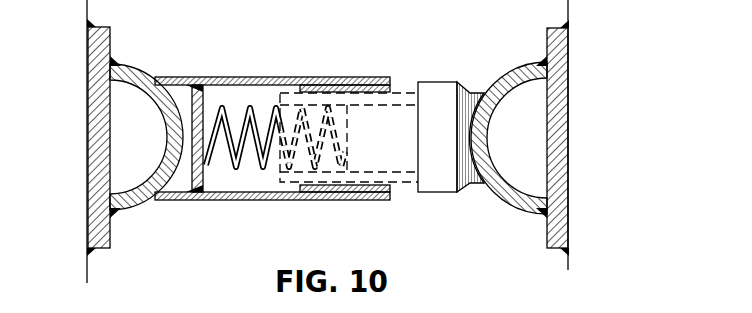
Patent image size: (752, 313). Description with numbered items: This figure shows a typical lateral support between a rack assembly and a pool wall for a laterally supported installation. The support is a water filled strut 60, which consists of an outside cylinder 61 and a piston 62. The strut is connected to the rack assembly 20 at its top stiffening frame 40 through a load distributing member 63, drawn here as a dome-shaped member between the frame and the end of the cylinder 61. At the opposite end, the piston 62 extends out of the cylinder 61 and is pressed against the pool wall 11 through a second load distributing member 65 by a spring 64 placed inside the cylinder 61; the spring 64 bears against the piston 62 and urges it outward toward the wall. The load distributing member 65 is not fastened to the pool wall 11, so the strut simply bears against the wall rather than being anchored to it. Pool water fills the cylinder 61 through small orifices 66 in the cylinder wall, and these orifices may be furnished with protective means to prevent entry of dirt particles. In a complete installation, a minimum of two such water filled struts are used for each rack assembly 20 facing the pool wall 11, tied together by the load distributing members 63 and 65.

The pool wall 11 is at (568, 265).
The rack assembly 20 is at (87, 275).
The top stiffening frame 40 is at (88, 176).
The water filled strut 60 is at (362, 65).
The outside cylinder 61 is at (350, 198).
The piston 62 is at (395, 100).
The load distributing member 63 is at (125, 207).
The spring 64 is at (250, 172).
The load distributing member 65 is at (515, 205).
The small orifice 66 is at (232, 78).